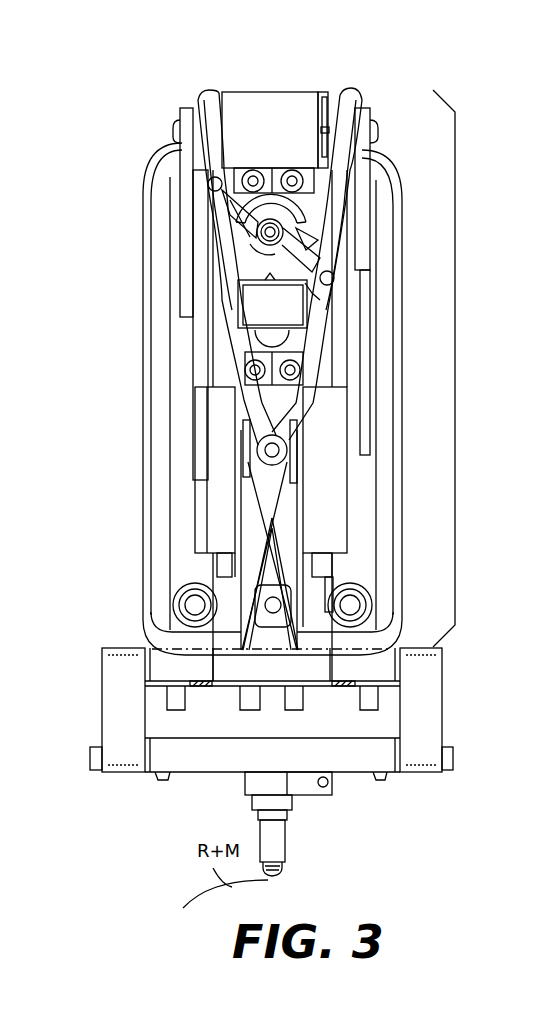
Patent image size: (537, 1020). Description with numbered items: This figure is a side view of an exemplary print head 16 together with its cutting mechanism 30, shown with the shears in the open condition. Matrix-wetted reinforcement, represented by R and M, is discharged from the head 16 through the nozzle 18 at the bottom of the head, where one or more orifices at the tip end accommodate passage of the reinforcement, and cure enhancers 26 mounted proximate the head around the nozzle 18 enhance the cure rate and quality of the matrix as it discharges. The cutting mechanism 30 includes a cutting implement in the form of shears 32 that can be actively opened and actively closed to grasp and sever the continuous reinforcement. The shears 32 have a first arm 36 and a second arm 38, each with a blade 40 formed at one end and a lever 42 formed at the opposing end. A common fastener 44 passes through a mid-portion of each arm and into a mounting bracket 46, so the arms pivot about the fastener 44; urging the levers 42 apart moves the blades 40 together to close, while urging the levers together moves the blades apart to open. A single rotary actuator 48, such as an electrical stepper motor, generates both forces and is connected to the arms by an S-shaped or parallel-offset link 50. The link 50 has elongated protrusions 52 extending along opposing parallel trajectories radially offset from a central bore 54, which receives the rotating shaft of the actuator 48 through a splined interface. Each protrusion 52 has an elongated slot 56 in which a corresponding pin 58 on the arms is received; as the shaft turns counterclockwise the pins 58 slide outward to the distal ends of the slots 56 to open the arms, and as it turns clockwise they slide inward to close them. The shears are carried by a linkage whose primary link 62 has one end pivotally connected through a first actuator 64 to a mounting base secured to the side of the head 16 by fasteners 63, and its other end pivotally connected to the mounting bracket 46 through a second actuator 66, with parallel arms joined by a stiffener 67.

The print head 16 is at (79, 157).
The nozzle 18 is at (288, 843).
The cure enhancer 26 is at (164, 773).
The cutting mechanism 30 is at (456, 372).
The shears 32 is at (232, 594).
The first arm 36 is at (208, 94).
The second arm 38 is at (358, 97).
The blade 40 is at (292, 593).
The lever 42 is at (345, 138).
The common fastener 44 is at (250, 437).
The mounting bracket 46 is at (250, 463).
The rotary actuator 48 is at (310, 203).
The link 50 is at (310, 225).
The elongated protrusions 52 is at (305, 244).
The central bore 54 is at (228, 252).
The elongated slot 56 is at (237, 207).
The pin 58 is at (215, 183).
The primary link 62 is at (187, 363).
The fasteners 63 is at (173, 604).
The first actuator 64 is at (195, 503).
The second actuator 66 is at (262, 92).
The stiffener 67 is at (188, 237).